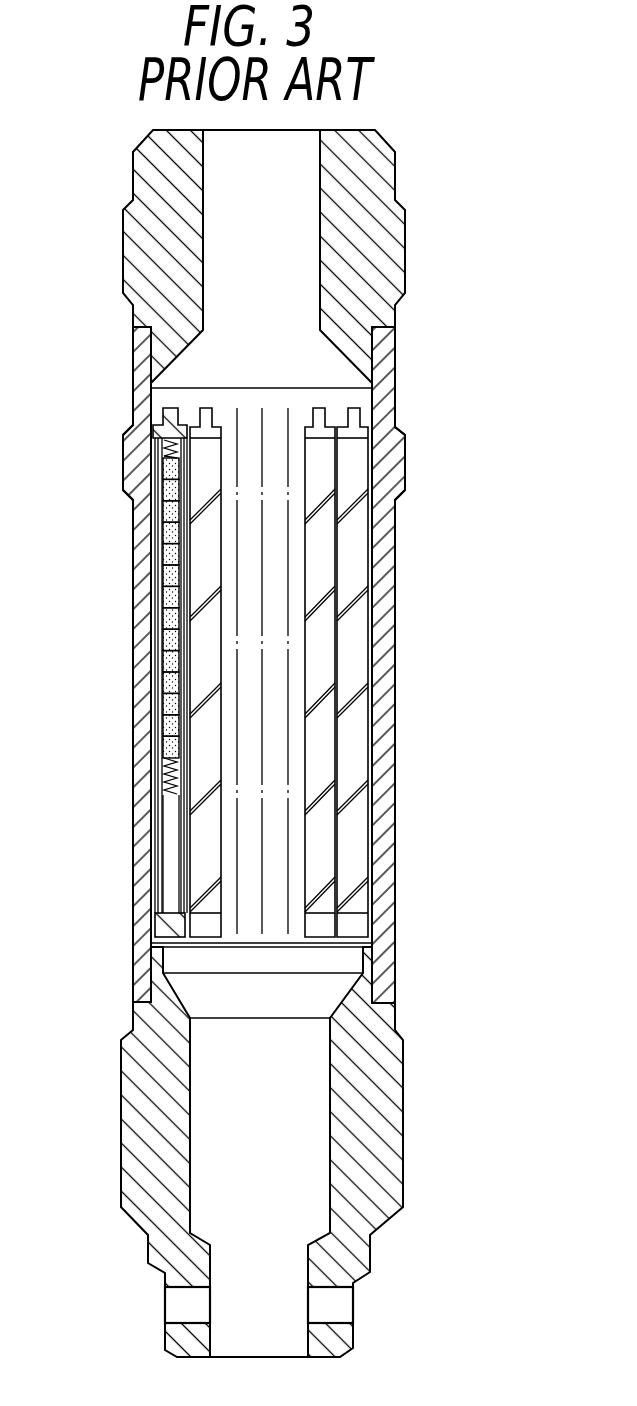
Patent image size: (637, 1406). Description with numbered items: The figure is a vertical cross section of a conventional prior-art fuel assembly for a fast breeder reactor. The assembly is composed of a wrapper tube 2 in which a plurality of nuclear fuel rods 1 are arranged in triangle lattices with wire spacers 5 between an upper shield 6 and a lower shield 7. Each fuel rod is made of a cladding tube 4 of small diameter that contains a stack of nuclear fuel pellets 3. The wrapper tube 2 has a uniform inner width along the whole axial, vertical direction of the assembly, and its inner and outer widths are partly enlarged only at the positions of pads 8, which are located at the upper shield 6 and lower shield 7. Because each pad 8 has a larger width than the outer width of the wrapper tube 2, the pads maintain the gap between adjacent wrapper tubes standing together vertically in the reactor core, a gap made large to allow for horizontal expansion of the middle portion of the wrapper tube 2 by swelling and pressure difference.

The nuclear fuel rods 1 is at (360, 532).
The wrapper tube 2 is at (387, 602).
The nuclear fuel pellets 3 is at (167, 570).
The cladding tube 4 is at (153, 647).
The wire spacers 5 is at (215, 778).
The upper shield 6 is at (395, 250).
The lower shield 7 is at (382, 1143).
The pad 8 is at (400, 435).